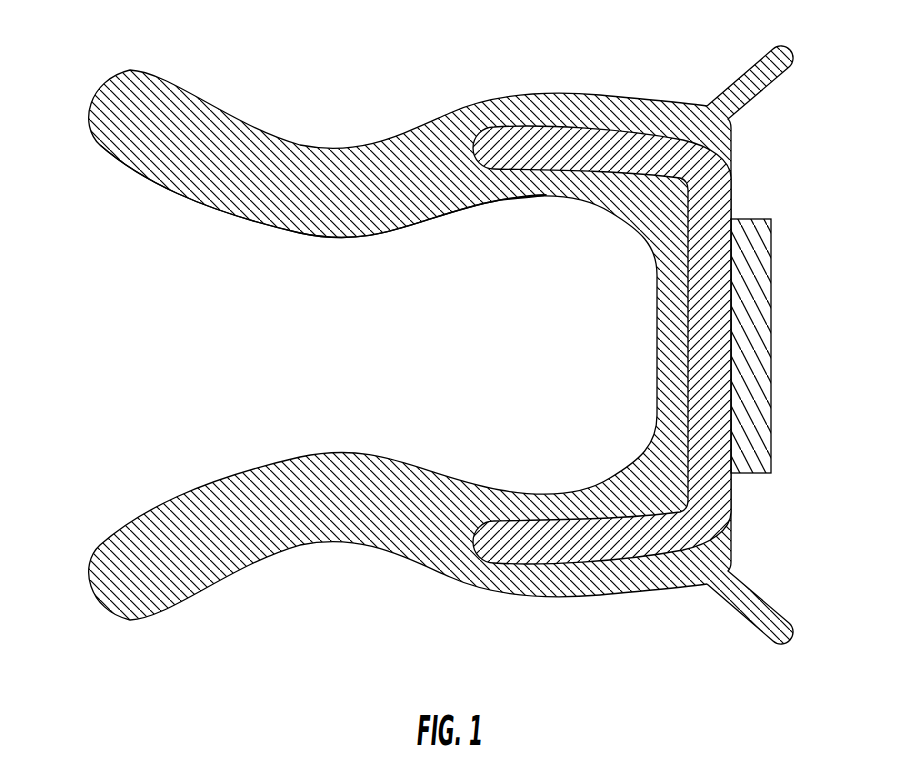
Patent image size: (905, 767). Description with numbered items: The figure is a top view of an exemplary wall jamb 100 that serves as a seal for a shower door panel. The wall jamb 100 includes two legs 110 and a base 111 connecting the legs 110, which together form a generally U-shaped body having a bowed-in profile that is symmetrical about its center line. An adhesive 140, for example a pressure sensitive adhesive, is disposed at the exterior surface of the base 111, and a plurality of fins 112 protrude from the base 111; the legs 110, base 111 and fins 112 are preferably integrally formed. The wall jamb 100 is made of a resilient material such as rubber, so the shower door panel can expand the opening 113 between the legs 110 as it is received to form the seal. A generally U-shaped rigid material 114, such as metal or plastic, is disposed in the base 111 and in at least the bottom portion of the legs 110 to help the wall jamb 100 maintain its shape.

The wall jamb 100 is at (82, 87).
The legs 110 is at (263, 133).
The base 111 is at (657, 337).
The fins 112 is at (763, 95).
The opening 113 is at (248, 339).
The rigid material 114 is at (594, 146).
The adhesive 140 is at (772, 310).